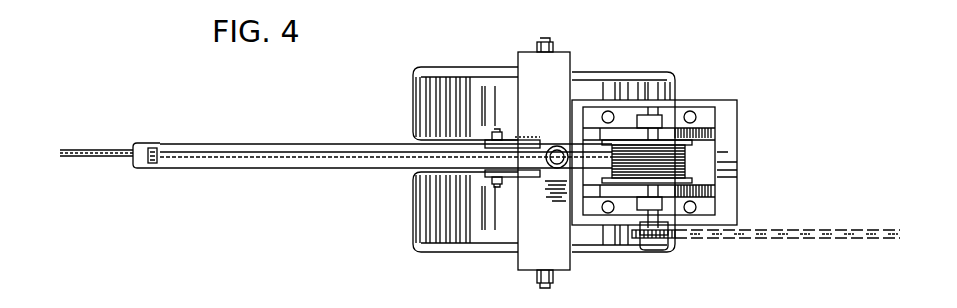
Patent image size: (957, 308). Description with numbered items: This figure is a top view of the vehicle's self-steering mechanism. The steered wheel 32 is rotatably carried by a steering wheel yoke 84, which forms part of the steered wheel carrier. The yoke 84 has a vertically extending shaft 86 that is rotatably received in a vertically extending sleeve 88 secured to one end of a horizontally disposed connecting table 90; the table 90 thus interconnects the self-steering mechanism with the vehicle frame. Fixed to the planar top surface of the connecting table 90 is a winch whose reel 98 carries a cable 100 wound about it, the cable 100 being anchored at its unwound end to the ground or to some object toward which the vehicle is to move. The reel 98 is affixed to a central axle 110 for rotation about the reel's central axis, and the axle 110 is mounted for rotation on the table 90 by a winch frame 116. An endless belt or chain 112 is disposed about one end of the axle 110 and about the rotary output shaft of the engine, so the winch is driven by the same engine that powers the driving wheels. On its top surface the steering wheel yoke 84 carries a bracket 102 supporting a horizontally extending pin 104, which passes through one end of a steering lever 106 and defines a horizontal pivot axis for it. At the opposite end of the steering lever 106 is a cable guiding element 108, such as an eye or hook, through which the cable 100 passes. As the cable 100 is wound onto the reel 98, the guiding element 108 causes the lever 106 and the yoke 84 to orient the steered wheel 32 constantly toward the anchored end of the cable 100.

The steered wheel 32 is at (432, 220).
The steering wheel yoke 84 is at (558, 64).
The vertically extending shaft 86 is at (556, 146).
The vertically extending sleeve 88 is at (557, 170).
The connecting table 90 is at (735, 205).
The reel 98 is at (700, 147).
The cable 100 is at (101, 148).
The bracket 102 is at (513, 138).
The pin 104 is at (492, 130).
The steering lever 106 is at (313, 143).
The cable guiding element 108 is at (161, 143).
The central axle 110 is at (651, 252).
The endless belt or chain 112 is at (763, 246).
The winch frame 116 is at (712, 117).